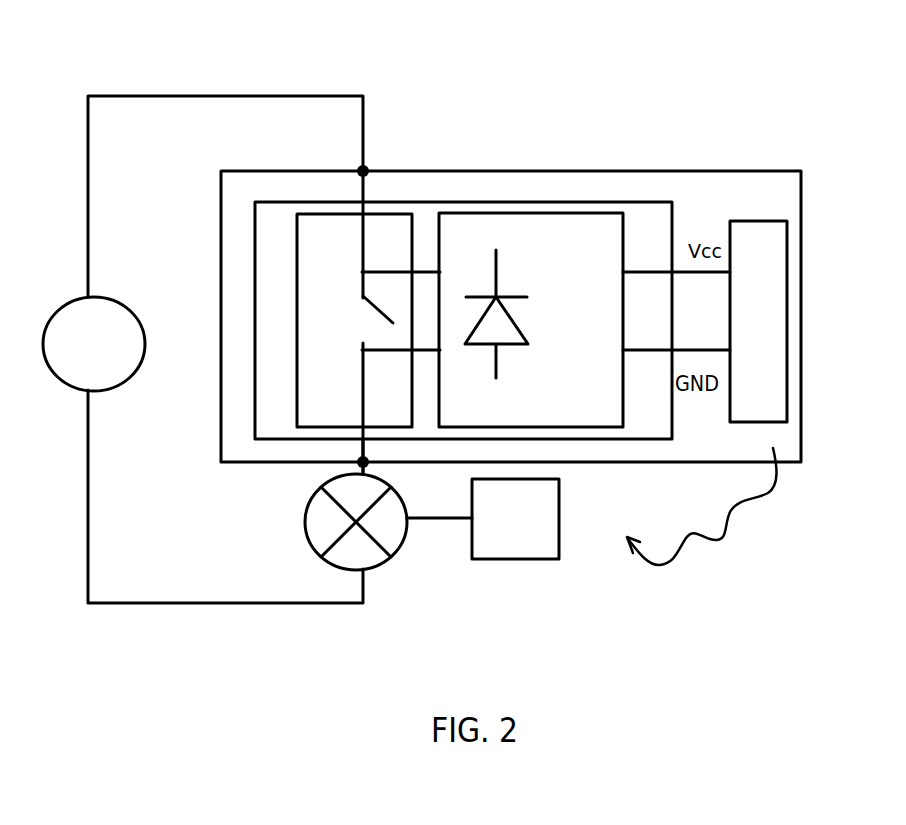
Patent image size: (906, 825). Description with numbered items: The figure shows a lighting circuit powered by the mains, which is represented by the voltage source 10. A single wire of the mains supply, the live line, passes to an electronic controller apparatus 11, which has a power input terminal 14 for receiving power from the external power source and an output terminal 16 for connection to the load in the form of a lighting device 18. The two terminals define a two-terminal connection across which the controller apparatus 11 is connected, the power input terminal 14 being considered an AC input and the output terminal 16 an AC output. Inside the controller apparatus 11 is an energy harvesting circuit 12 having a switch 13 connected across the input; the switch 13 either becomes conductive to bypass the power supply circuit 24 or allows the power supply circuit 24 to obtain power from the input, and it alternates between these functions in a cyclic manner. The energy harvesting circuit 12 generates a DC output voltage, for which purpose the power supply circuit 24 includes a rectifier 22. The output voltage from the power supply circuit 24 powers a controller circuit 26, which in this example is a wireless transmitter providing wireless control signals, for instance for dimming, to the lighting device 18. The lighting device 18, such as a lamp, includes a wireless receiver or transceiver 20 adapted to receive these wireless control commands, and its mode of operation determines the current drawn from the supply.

The voltage source 10 is at (70, 305).
The electronic controller apparatus 11 is at (734, 175).
The energy harvesting circuit 12 is at (457, 200).
The switch 13 is at (300, 298).
The power input terminal 14 is at (368, 170).
The output terminal 16 is at (355, 463).
The lighting device 18 is at (304, 537).
The wireless receiver or transceiver 20 is at (517, 560).
The rectifier 22 is at (519, 296).
The power supply circuit 24 is at (597, 214).
The controller circuit 26 is at (776, 221).